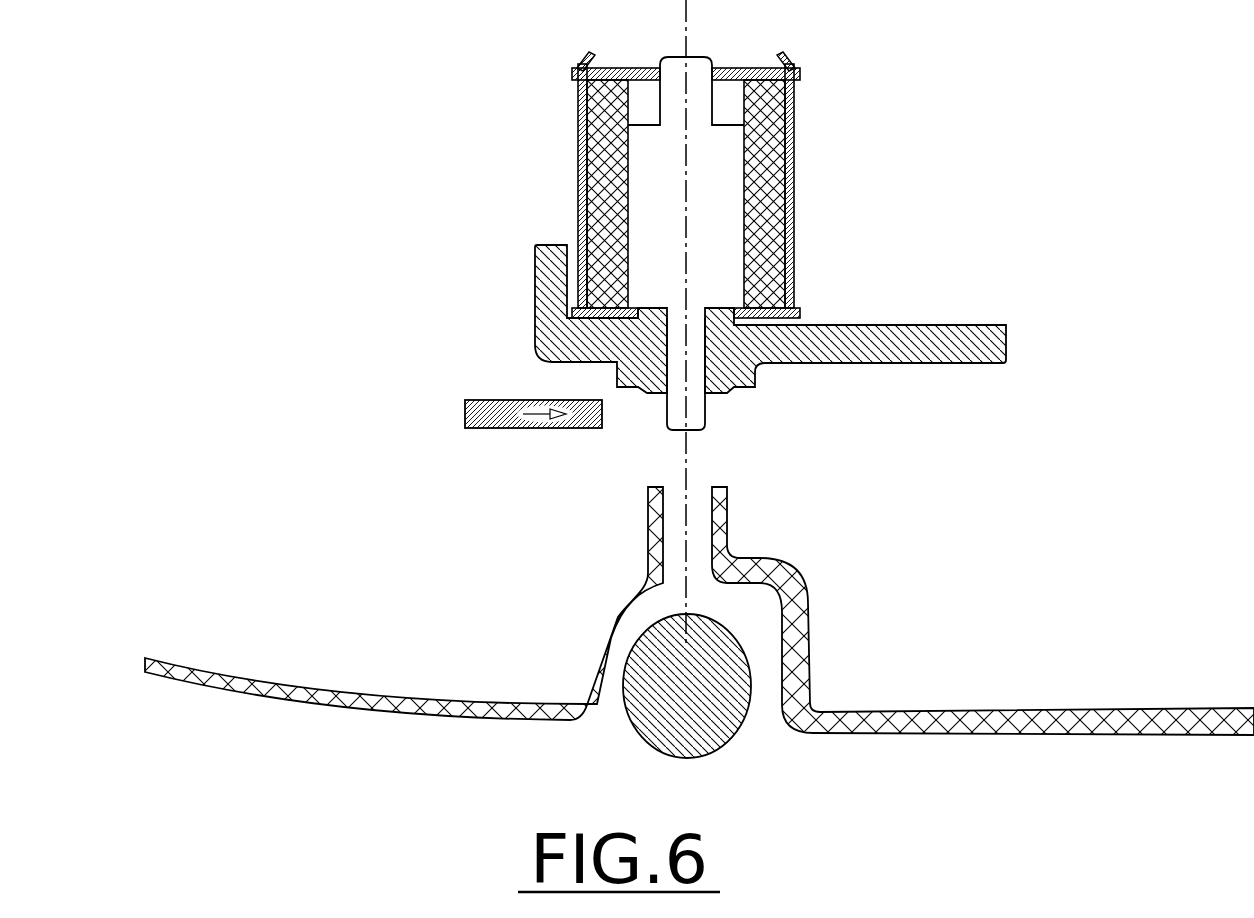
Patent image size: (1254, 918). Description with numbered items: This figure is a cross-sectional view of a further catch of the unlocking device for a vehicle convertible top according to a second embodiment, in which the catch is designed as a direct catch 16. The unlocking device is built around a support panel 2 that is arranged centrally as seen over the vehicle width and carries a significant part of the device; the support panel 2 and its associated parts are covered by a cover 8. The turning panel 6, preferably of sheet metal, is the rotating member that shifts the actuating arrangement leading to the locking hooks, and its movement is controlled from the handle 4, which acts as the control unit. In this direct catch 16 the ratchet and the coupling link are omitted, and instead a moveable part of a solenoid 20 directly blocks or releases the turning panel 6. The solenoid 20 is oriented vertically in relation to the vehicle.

The support panel 2 is at (978, 332).
The handle 4 is at (655, 673).
The turning panel 6 is at (467, 400).
The cover 8 is at (1083, 723).
The direct catch 16 is at (701, 417).
The solenoid 20 is at (794, 177).